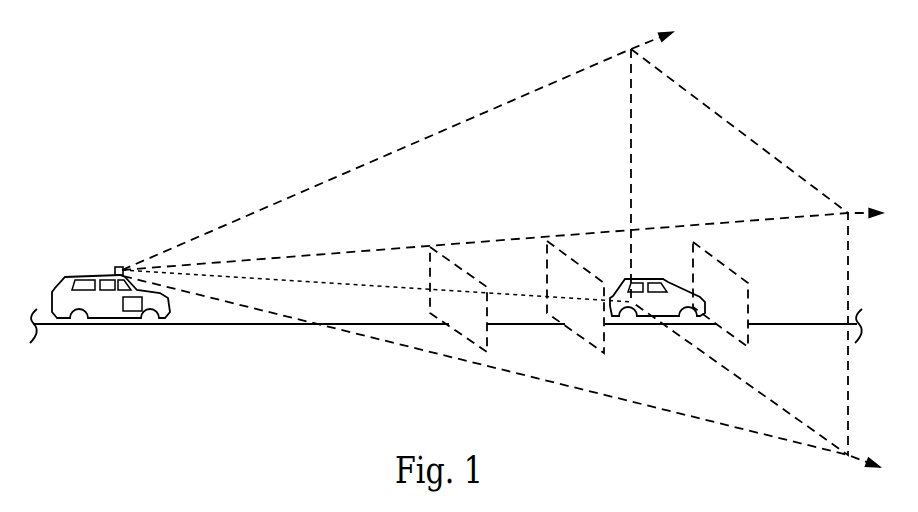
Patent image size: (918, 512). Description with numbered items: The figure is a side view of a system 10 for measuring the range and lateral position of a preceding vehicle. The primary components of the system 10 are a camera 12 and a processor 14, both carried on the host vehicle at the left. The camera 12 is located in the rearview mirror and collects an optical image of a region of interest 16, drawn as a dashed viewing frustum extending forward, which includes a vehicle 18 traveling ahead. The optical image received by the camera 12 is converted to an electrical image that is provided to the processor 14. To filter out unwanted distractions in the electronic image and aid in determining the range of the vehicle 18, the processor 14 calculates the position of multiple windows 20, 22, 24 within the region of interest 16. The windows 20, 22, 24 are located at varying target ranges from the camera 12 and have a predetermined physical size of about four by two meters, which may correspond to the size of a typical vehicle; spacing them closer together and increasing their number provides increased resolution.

The system 10 is at (135, 235).
The camera 12 is at (118, 268).
The processor 14 is at (131, 311).
The region of interest 16 is at (362, 165).
The vehicle 18 is at (650, 279).
The window 20 is at (463, 270).
The window 22 is at (580, 268).
The window 24 is at (720, 260).